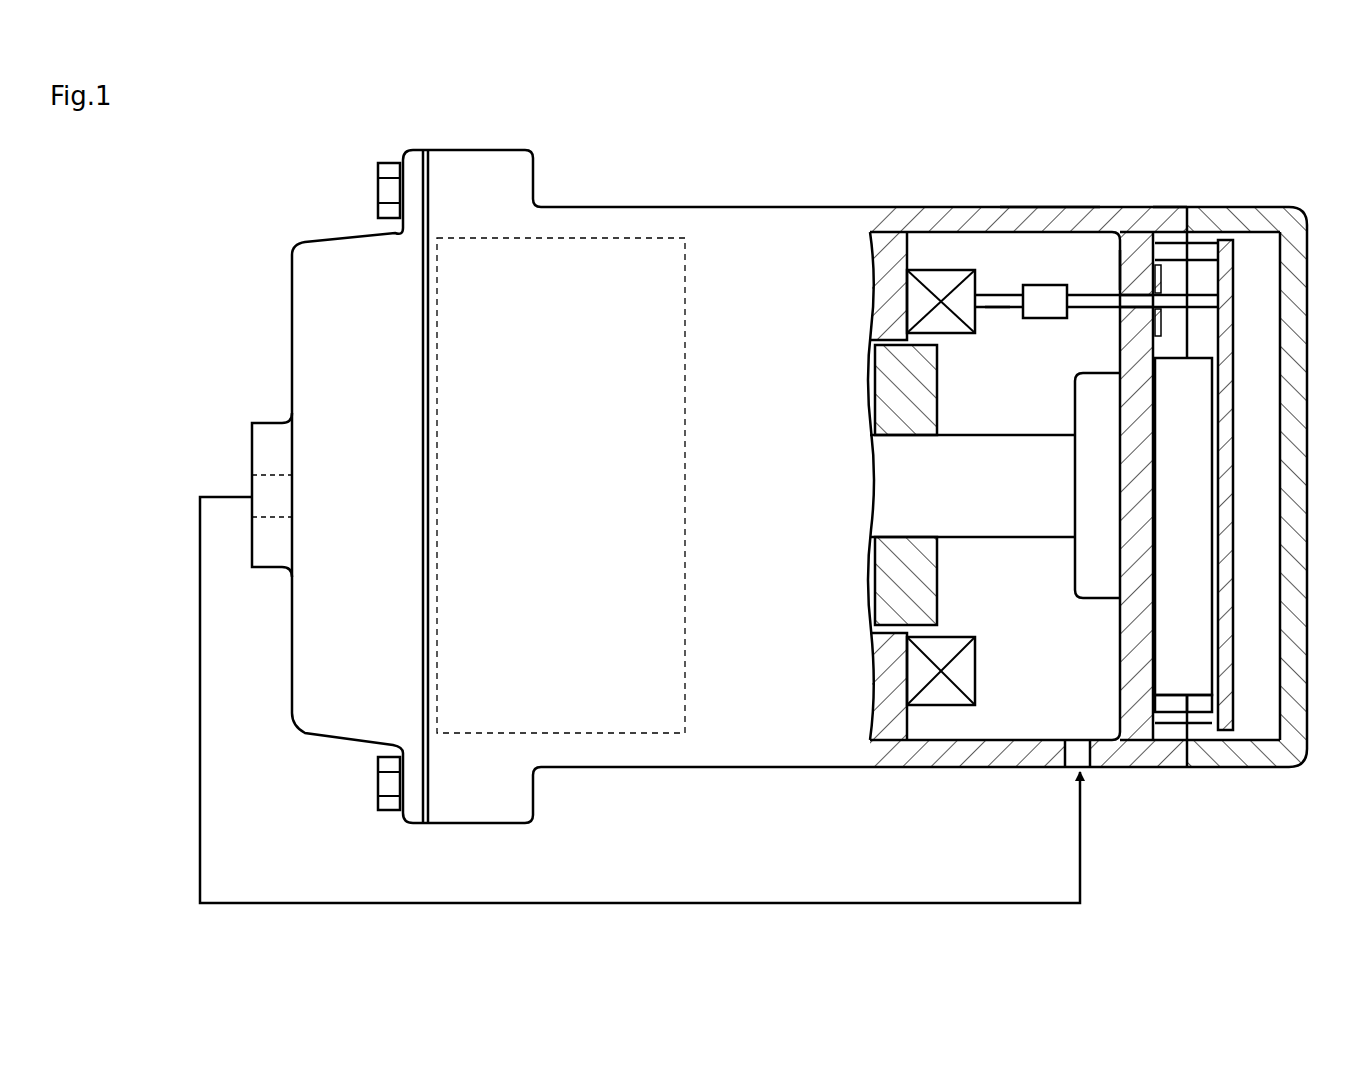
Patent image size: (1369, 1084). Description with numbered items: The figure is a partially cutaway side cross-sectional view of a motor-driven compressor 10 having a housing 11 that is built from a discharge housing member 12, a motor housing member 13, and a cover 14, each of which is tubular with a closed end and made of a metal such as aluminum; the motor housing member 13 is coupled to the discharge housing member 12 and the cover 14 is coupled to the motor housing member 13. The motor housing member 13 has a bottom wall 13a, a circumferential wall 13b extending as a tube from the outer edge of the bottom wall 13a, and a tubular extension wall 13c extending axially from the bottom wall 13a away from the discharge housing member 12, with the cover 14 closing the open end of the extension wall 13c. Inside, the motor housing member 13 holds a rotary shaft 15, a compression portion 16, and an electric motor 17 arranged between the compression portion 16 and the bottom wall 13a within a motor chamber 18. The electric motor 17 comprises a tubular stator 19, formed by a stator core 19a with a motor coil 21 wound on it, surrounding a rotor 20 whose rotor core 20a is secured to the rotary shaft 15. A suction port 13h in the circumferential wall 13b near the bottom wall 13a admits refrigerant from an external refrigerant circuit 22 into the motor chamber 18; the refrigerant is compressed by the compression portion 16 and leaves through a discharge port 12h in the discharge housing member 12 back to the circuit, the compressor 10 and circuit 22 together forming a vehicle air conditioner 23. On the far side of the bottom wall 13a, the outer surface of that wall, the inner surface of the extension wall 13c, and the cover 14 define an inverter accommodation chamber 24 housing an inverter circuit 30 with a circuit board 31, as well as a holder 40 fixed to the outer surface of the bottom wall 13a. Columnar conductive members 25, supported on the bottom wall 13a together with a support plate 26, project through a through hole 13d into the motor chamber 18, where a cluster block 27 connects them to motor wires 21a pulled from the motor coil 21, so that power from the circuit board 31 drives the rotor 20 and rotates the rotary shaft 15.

The motor-driven compressor 10 is at (324, 194).
The housing 11 is at (718, 207).
The discharge housing member 12 is at (292, 286).
The discharge port 12h is at (252, 481).
The motor housing member 13 is at (872, 230).
The bottom wall 13a is at (1120, 262).
The circumferential wall 13b is at (1085, 195).
The extension wall 13c is at (1168, 220).
The through hole 13d is at (1137, 312).
The suction port 13h is at (1087, 745).
The cover 14 is at (1208, 207).
The rotary shaft 15 is at (992, 523).
The compression portion 16 is at (620, 237).
The electric motor 17 is at (902, 232).
The motor chamber 18 is at (1041, 661).
The stator 19 is at (1062, 413).
The stator core 19a is at (907, 250).
The rotor 20 is at (937, 596).
The rotor core 20a is at (930, 388).
The motor coil 21 is at (972, 292).
The motor wires 21a is at (997, 310).
The external refrigerant circuit 22 is at (1082, 882).
The vehicle air conditioner 23 is at (1102, 906).
The inverter accommodation chamber 24 is at (1259, 481).
The conductive members 25 is at (1168, 308).
The support plate 26 is at (1165, 275).
The cluster block 27 is at (1050, 318).
The inverter circuit 30 is at (1253, 450).
The circuit board 31 is at (1228, 346).
The holder 40 is at (1190, 572).